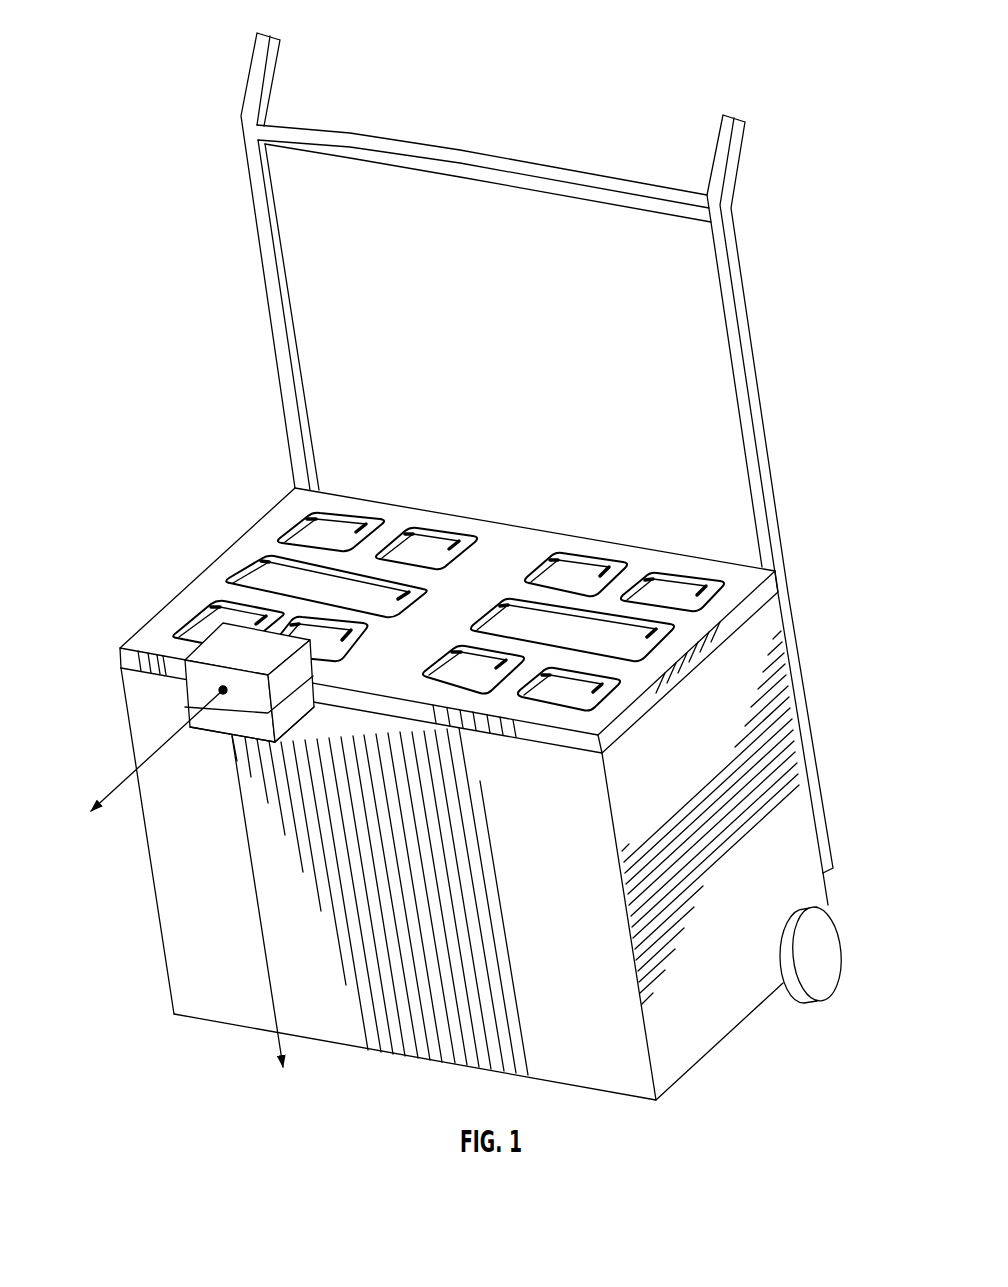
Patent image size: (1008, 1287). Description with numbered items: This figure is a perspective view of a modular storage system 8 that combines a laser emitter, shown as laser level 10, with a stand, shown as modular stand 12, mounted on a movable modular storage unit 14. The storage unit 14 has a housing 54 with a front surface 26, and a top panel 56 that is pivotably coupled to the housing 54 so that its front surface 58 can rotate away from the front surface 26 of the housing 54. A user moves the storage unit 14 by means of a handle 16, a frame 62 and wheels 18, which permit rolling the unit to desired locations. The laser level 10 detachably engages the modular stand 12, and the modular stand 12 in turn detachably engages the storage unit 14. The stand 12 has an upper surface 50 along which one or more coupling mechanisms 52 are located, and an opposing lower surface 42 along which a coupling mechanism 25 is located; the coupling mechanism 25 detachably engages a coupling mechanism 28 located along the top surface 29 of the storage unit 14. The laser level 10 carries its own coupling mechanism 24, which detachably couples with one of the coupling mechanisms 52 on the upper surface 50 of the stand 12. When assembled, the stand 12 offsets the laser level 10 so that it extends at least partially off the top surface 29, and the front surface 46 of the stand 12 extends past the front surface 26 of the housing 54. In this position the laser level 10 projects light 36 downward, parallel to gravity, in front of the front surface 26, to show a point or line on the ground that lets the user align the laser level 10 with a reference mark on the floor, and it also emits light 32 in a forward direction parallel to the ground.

The modular storage system 8 is at (204, 238).
The laser level 10 is at (215, 717).
The modular stand 12 is at (306, 712).
The movable modular storage unit 14 is at (752, 652).
The handle 16 is at (244, 88).
The wheels 18 is at (820, 966).
The coupling mechanism 24 is at (176, 698).
The coupling mechanism 25 is at (175, 717).
The front surface 26 is at (615, 1067).
The coupling mechanism 28 is at (595, 565).
The top surface 29 is at (750, 575).
The light 32 is at (110, 777).
The light 36 is at (250, 862).
The lower surface 42 is at (268, 746).
The front surface 46 is at (215, 722).
The upper surface 50 is at (287, 610).
The coupling mechanism 52 is at (323, 627).
The housing 54 is at (790, 840).
The top panel 56 is at (515, 545).
The front surface 58 is at (550, 748).
The frame 62 is at (342, 158).